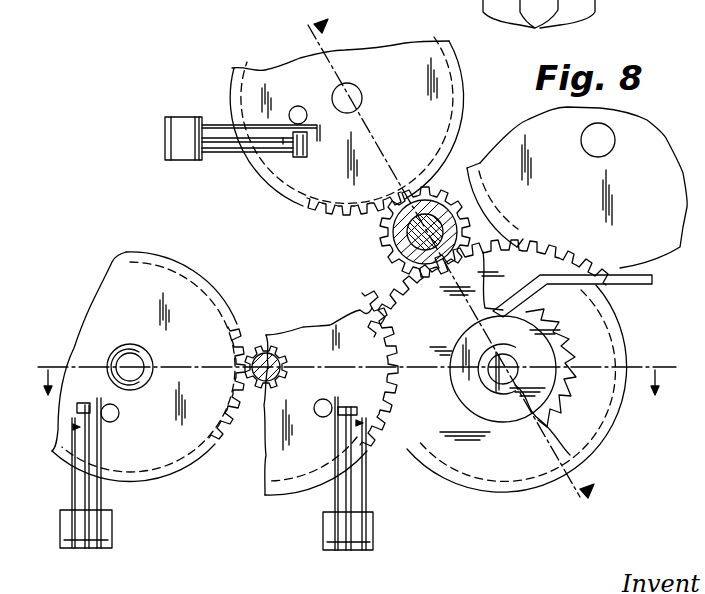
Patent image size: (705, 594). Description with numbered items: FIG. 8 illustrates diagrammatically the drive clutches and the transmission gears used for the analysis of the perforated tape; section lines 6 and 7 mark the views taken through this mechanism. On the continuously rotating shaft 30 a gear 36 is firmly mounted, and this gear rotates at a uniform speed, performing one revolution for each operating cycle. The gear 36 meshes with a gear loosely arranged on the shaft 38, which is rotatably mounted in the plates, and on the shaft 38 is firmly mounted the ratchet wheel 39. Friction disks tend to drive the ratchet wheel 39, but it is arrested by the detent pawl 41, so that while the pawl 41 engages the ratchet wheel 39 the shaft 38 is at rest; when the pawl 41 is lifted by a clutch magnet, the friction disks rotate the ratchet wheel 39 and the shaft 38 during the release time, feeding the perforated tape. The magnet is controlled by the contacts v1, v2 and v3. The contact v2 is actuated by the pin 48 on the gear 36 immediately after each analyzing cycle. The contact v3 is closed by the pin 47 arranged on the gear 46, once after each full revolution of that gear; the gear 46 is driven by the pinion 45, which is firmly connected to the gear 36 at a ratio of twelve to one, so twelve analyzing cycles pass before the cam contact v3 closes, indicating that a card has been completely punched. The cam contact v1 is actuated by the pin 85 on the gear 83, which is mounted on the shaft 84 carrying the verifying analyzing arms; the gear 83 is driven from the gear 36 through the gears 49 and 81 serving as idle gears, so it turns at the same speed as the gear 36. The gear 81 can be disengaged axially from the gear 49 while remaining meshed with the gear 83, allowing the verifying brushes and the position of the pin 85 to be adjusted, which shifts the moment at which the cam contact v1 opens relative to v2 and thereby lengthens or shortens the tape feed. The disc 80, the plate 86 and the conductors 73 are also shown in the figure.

The section line 6- 6 is at (350, 383).
The section line 7- 7 is at (457, 260).
The shaft 30 is at (262, 345).
The gear 36 is at (263, 475).
The shaft 38 is at (500, 383).
The ratchet wheel 39 is at (568, 333).
The detent pawl 41 is at (637, 283).
The pinion 45 is at (267, 383).
The gear 46 is at (182, 460).
The pin 47 is at (120, 417).
The pin 48 is at (322, 417).
The gear 49 is at (453, 460).
The conductors 73 is at (539, 26).
The disc 80 is at (607, 420).
The gear 81 is at (390, 263).
The gear 83 is at (300, 173).
The shaft 84 is at (350, 83).
The pin 85 is at (298, 106).
The cam plate 86 is at (655, 232).
The cam contact v1 is at (227, 133).
The contact v2 is at (345, 465).
The cam contact v3 is at (82, 473).